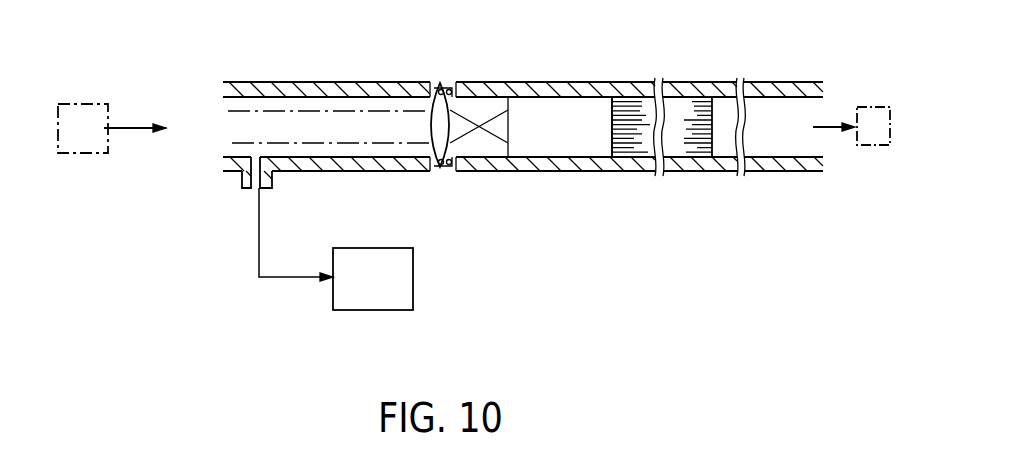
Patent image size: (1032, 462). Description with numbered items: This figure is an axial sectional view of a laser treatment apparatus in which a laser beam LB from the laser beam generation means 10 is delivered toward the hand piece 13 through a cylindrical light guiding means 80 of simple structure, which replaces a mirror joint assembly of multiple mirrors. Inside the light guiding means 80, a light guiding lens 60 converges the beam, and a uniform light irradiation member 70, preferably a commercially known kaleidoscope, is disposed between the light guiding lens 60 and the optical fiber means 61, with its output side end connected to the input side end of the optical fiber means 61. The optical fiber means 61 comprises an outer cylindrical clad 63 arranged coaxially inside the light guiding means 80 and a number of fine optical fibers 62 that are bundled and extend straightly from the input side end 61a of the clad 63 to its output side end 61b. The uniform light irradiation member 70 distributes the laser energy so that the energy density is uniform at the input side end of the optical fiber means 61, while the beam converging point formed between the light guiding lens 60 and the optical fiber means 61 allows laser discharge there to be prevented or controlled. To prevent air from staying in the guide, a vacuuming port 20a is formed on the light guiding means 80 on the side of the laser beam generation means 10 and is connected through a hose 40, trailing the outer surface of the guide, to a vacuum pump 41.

The laser beam generation means 10 is at (72, 104).
The laser beam LB is at (135, 127).
The hand piece 13 is at (853, 126).
The vacuuming port 20a is at (272, 191).
The hose 40 is at (259, 271).
The vacuum pump 41 is at (413, 295).
The light guiding means 80 is at (424, 81).
The light guiding lens 60 is at (452, 162).
The uniform light irradiation member 70 is at (503, 172).
The input side end 61a is at (605, 172).
The optical fiber means 61 is at (666, 156).
The clad 63 is at (697, 157).
The output side end 61b is at (718, 150).
The optical fibers 62 is at (632, 98).